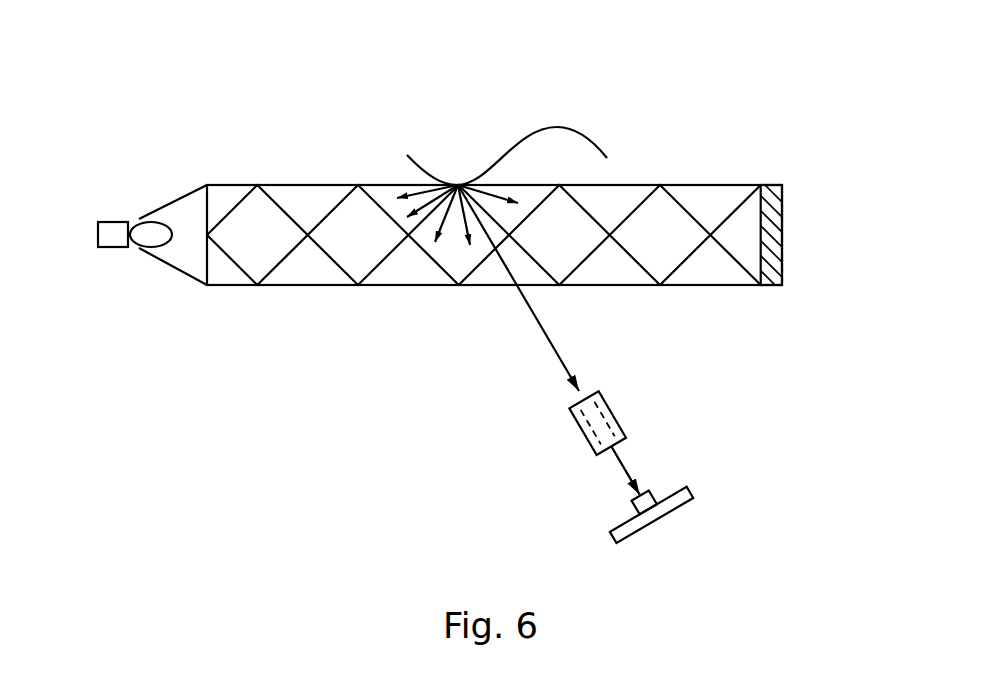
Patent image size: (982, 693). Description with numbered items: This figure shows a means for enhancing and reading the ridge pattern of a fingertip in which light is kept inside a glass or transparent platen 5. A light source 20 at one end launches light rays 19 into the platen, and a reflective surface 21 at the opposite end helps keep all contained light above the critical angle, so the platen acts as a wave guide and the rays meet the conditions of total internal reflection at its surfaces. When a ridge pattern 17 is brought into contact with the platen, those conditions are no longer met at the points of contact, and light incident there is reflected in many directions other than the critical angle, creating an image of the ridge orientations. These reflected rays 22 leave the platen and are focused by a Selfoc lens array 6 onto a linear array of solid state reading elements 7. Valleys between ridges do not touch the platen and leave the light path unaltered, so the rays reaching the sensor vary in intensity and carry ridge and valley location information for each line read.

The glass or transparent platen 5 is at (640, 183).
The Selfoc lens array 6 is at (613, 405).
The linear array of solid state reading elements 7 is at (653, 485).
The ridge pattern 17 is at (550, 123).
The light rays 19 is at (337, 195).
The light source 20 is at (139, 219).
The reflective surface 21 is at (773, 183).
The reflected rays 22 is at (540, 330).